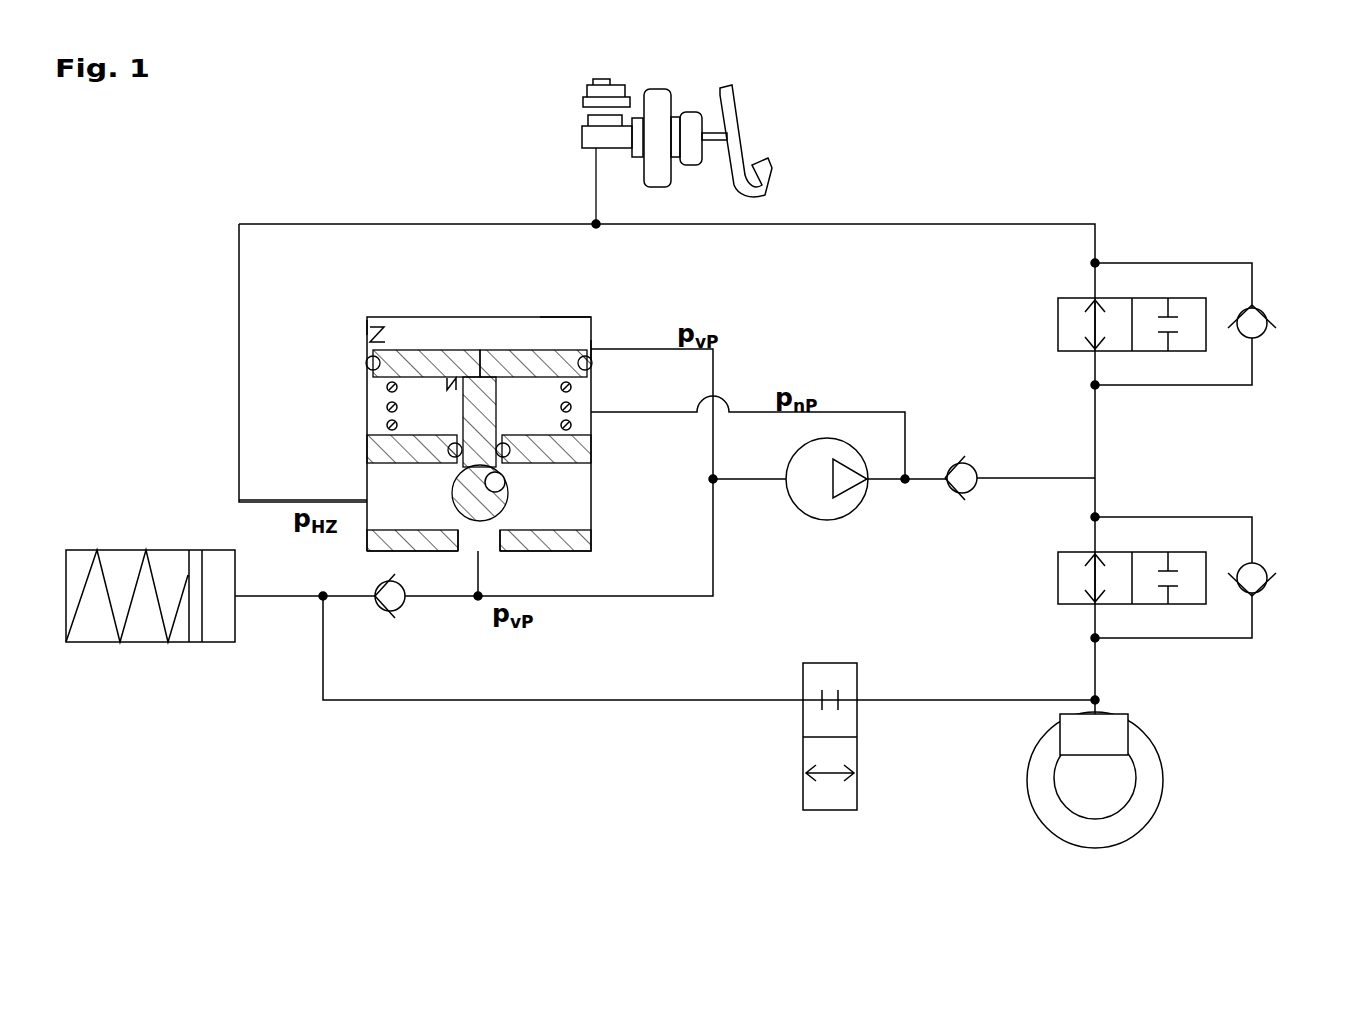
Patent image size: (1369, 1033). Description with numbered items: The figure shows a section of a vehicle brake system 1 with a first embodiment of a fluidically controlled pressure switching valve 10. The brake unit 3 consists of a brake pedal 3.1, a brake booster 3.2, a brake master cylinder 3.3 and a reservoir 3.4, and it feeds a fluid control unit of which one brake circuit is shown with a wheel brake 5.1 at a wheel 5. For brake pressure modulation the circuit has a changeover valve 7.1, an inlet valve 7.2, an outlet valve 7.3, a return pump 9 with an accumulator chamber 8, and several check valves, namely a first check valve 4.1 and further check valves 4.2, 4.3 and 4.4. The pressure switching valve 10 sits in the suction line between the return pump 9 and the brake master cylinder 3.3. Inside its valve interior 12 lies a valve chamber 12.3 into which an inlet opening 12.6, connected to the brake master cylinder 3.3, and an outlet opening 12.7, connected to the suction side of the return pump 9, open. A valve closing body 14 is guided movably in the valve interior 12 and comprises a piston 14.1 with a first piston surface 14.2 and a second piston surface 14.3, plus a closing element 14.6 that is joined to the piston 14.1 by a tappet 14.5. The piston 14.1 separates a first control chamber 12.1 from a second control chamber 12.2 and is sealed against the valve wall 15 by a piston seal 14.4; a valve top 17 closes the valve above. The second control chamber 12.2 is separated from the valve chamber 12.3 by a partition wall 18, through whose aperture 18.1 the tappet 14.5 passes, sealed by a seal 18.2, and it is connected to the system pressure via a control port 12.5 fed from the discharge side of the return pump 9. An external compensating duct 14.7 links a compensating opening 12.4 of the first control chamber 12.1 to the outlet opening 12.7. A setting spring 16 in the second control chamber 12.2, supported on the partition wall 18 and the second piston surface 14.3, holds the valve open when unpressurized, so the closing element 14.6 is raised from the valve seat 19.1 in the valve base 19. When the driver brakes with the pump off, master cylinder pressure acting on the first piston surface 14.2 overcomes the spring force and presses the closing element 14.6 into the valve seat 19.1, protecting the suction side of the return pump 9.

The vehicle brake system 1 is at (1119, 178).
The brake unit 3 is at (706, 80).
The brake pedal 3.1 is at (736, 148).
The brake booster 3.2 is at (660, 104).
The brake master cylinder 3.3 is at (598, 138).
The reservoir 3.4 is at (598, 92).
The first check valve 4.1 is at (963, 476).
The check valve 4.2 is at (1262, 323).
The check valve 4.3 is at (1262, 579).
The check valve 4.4 is at (382, 612).
The wheel 5 is at (1150, 787).
The wheel brake 5.1 is at (1115, 720).
The changeover valve 7.1 is at (1056, 325).
The inlet valve 7.2 is at (1056, 578).
The outlet valve 7.3 is at (838, 750).
The accumulator chamber 8 is at (143, 623).
The return pump 9 is at (827, 507).
The pressure switching valve 10 is at (333, 308).
The valve interior 12 is at (574, 322).
The first control chamber 12.1 is at (389, 333).
The second control chamber 12.2 is at (410, 420).
The valve chamber 12.3 is at (575, 487).
The compensating opening 12.4 is at (595, 347).
The control port 12.5 is at (597, 411).
The inlet opening 12.6 is at (364, 504).
The outlet opening 12.7 is at (488, 550).
The valve closing body 14 is at (502, 351).
The piston 14.1 is at (428, 350).
The first piston surface 14.2 is at (541, 350).
The second piston surface 14.3 is at (457, 350).
The piston seal 14.4 is at (366, 364).
The tappet 14.5 is at (593, 462).
The closing element 14.6 is at (585, 542).
The external compensating duct 14.7 is at (714, 365).
The valve wall 15 is at (366, 332).
The setting spring 16 is at (387, 390).
The valve top 17 is at (558, 318).
The partition wall 18 is at (595, 464).
The aperture 18.1 is at (505, 495).
The seal 18.2 is at (418, 455).
The valve base 19 is at (557, 547).
The valve seat 19.1 is at (465, 552).